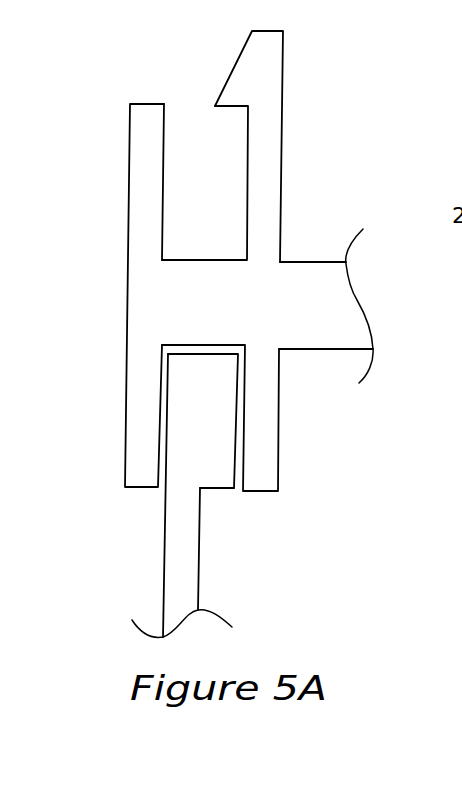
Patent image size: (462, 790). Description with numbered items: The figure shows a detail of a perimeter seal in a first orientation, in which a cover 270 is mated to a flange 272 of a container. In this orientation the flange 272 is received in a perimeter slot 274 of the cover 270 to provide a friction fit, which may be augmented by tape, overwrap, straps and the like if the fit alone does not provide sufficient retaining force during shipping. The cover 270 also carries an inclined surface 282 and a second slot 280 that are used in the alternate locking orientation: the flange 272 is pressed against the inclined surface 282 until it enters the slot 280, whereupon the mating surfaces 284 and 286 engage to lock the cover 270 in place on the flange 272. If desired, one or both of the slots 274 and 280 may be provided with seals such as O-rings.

The cover 270 is at (341, 308).
The flange 272 is at (178, 541).
The perimeter slot 274 is at (162, 423).
The slot 280 is at (164, 187).
The inclined surface 282 is at (232, 68).
The mating surface 284 is at (233, 108).
The mating surface 286 is at (218, 490).